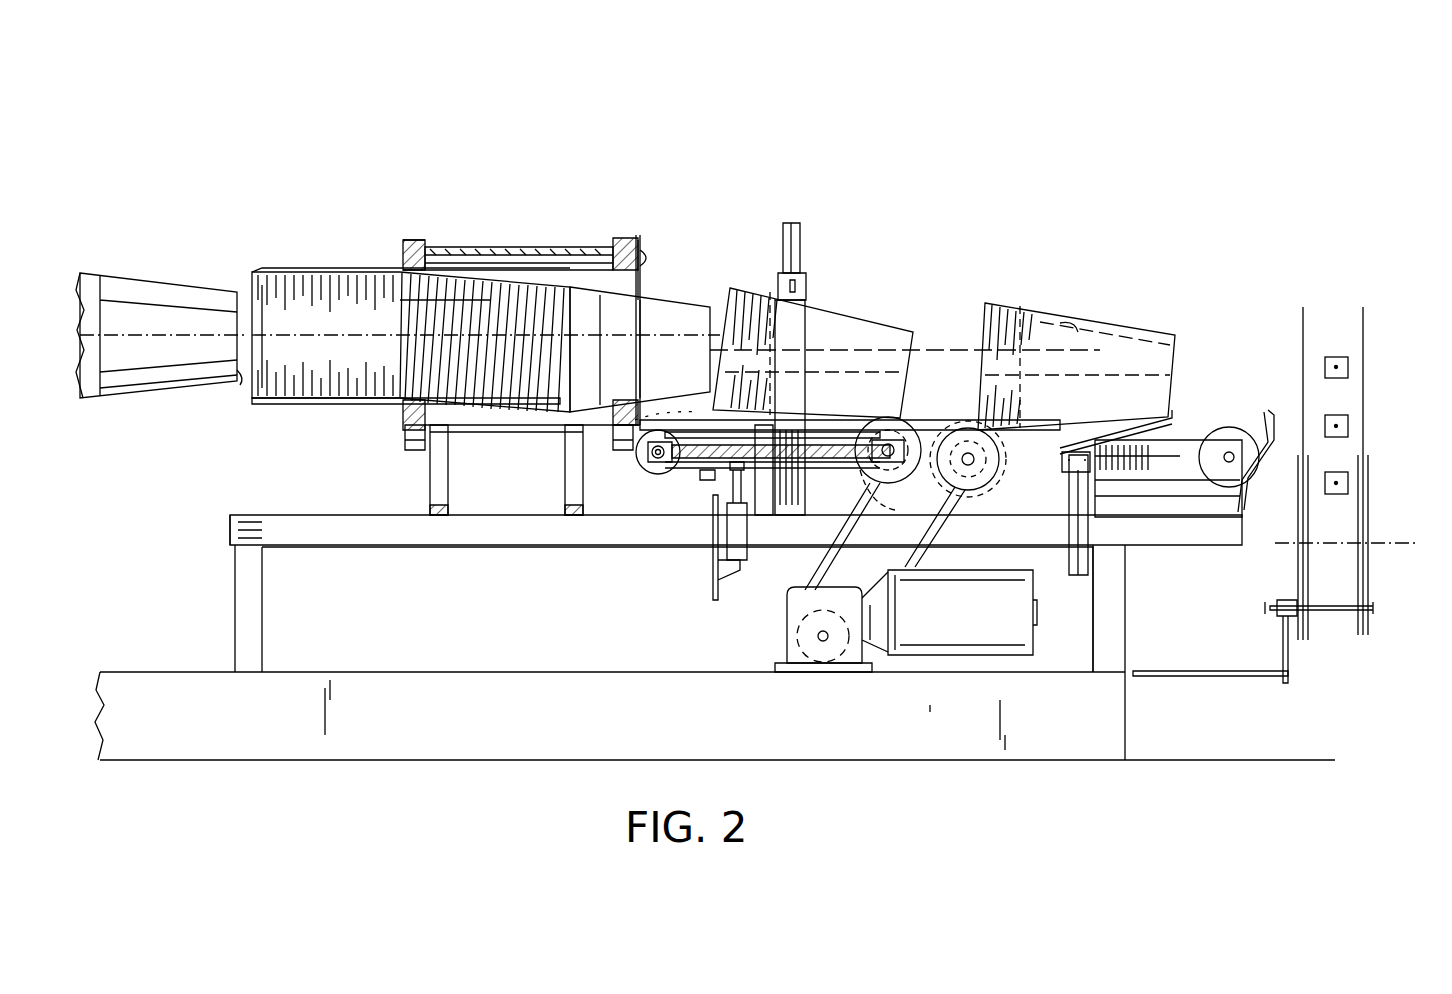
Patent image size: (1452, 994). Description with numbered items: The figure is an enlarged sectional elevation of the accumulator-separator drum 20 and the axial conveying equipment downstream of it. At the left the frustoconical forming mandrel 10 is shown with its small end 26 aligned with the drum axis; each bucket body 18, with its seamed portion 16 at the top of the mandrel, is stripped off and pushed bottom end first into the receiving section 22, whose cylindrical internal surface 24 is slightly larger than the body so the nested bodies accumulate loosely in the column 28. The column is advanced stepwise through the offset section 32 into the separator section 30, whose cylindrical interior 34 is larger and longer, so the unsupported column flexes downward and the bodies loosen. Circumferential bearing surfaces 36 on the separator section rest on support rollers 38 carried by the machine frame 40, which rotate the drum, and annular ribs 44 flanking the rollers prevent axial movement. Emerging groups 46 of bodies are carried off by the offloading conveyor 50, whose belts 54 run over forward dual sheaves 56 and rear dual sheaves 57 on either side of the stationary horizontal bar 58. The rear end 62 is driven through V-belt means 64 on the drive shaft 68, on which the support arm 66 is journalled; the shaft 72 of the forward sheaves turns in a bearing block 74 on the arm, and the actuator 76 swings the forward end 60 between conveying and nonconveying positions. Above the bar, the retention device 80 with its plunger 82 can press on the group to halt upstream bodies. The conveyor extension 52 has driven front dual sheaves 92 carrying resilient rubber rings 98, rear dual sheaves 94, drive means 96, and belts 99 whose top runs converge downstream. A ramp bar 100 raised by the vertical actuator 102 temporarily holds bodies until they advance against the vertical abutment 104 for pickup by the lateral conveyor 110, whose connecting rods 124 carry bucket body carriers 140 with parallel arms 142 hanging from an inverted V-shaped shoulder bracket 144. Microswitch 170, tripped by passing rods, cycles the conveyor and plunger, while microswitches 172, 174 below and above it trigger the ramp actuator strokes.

The forming mandrel 10 is at (140, 272).
The seamed portion 16 is at (1078, 336).
The bucket body 18 is at (660, 305).
The accumulator-separator drum 20 is at (352, 414).
The receiving section 22 is at (274, 403).
The cylindrical internal surface 24 is at (486, 314).
The small end 26 is at (240, 380).
The column 28 is at (376, 330).
The separator section 30 is at (483, 248).
The offset section 32 is at (404, 250).
The cylindrical interior 34 is at (641, 262).
The bearing surfaces 36 is at (418, 244).
The support rollers 38 is at (410, 450).
The machine frame 40 is at (430, 486).
The annular ribs 44 is at (636, 234).
The groups of bucket bodies 46 is at (854, 363).
The offloading conveyor 50 is at (726, 468).
The conveyor extension 52 is at (1178, 482).
The belts 54 is at (700, 480).
The forward dual sheaves 56 is at (638, 473).
The rear dual sheaves 57 is at (878, 486).
The stationary horizontal bar 58 is at (805, 428).
The forward end 60 is at (652, 458).
The rear end 62 is at (888, 484).
The V-belt means 64 is at (822, 560).
The support arm 66 is at (715, 444).
The drive shaft 68 is at (892, 446).
The shaft 72 is at (660, 460).
The bearing block 74 is at (650, 450).
The actuator 76 is at (750, 556).
The retention device 80 is at (802, 252).
The plunger 82 is at (807, 294).
The front dual sheaves 92 is at (976, 486).
The rear dual sheaves 94 is at (1236, 430).
The drive means 96 is at (940, 440).
The resilient rubber rings 98 is at (965, 492).
The belts 99 is at (1058, 440).
The ramp bar 100 is at (1175, 415).
The vertical actuator 102 is at (1076, 578).
The vertical abutment 104 is at (1274, 410).
The lateral conveyor 110 is at (1378, 576).
The connecting rods 124 is at (1330, 616).
The bucket body carriers 140 is at (1292, 686).
The parallel arms 142 is at (1198, 678).
The shoulder bracket 144 is at (1292, 662).
The microswitch 170 is at (1349, 426).
The microswitch 172 is at (1349, 483).
The microswitch 174 is at (1349, 367).